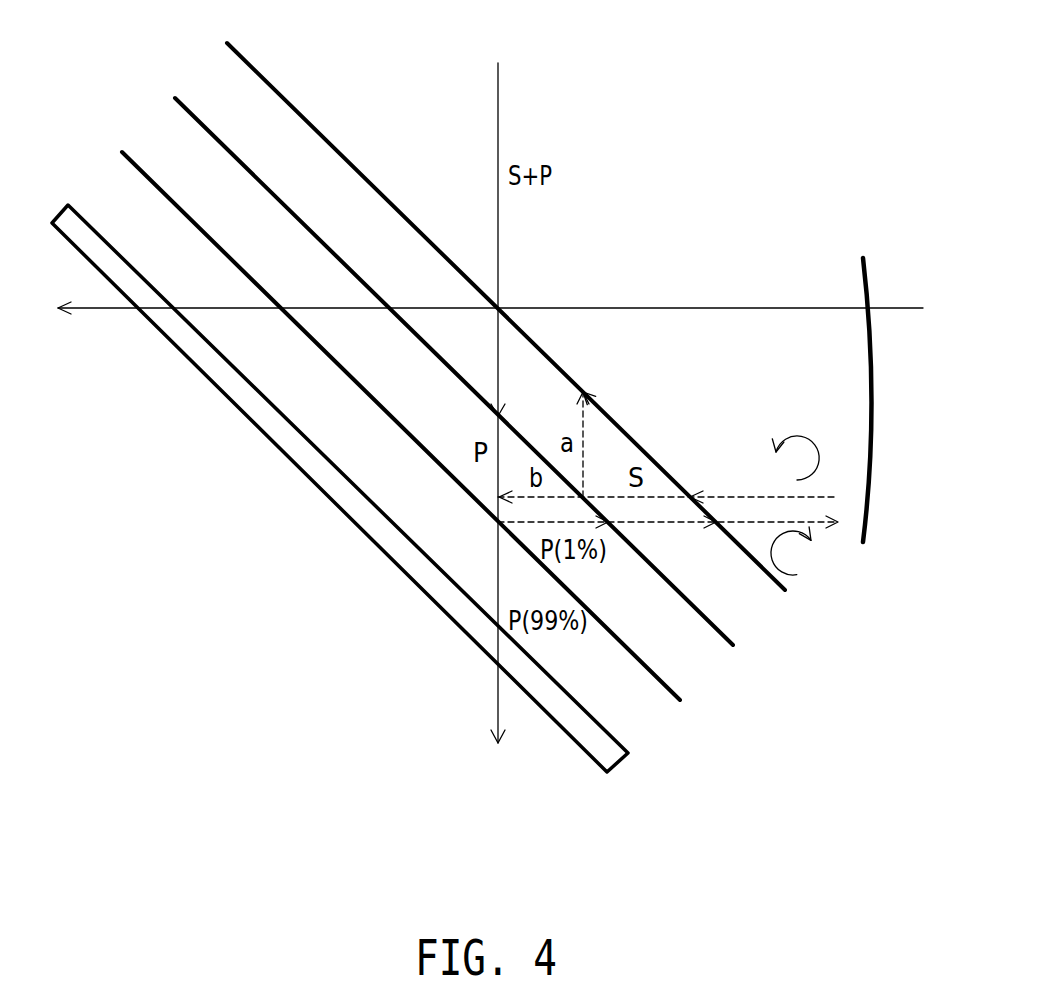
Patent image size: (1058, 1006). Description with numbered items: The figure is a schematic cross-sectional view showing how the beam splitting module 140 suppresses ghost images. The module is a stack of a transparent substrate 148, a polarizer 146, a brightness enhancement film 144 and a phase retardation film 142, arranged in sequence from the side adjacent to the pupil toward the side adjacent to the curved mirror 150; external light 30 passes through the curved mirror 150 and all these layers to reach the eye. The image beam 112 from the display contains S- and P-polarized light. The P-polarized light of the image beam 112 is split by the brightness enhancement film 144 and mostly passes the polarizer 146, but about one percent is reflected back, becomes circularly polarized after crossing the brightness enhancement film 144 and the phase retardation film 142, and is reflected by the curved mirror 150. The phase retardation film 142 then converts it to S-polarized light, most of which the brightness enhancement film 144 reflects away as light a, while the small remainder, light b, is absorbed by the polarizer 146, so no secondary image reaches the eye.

The external light 30 is at (898, 308).
The image beam 112 is at (499, 98).
The beam splitting module 140 is at (471, 418).
The phase retardation film 142 is at (777, 577).
The brightness enhancement film 144 is at (710, 630).
The polarizer 146 is at (655, 683).
The transparent substrate 148 is at (625, 757).
The curved mirror 150 is at (870, 507).